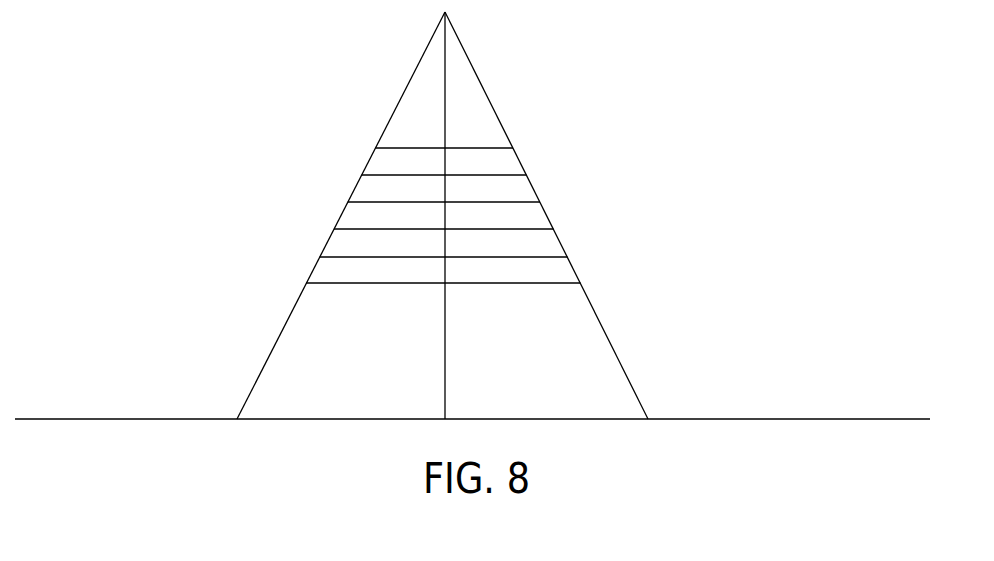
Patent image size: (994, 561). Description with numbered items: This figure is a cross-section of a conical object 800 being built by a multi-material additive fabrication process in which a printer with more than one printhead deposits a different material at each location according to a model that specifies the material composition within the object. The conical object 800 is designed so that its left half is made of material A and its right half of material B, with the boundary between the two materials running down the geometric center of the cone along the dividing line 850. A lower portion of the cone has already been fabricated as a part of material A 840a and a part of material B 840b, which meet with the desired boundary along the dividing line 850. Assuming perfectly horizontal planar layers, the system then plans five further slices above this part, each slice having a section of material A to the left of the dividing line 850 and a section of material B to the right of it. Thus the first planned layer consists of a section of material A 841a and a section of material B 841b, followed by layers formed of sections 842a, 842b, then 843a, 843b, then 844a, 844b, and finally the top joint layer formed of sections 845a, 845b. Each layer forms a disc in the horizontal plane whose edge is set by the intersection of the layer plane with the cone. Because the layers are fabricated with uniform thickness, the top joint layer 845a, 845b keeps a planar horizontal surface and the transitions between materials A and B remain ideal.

The conical object 800 is at (374, 88).
The dividing line 850 is at (448, 56).
The part of material A 840a is at (264, 382).
The part of material B 840b is at (604, 360).
The section of material A of first slice 841a is at (325, 269).
The section of material B of first slice 841b is at (561, 268).
The section of material A of second slice 842a is at (340, 241).
The section of material B of second slice 842b is at (547, 241).
The section of material A of third slice 843a is at (354, 213).
The section of material B of third slice 843b is at (533, 214).
The section of material A of fourth slice 844a is at (368, 187).
The section of material B of fourth slice 844b is at (520, 188).
The section of material A of top joint layer 845a is at (383, 160).
The section of material B of top joint layer 845b is at (512, 160).